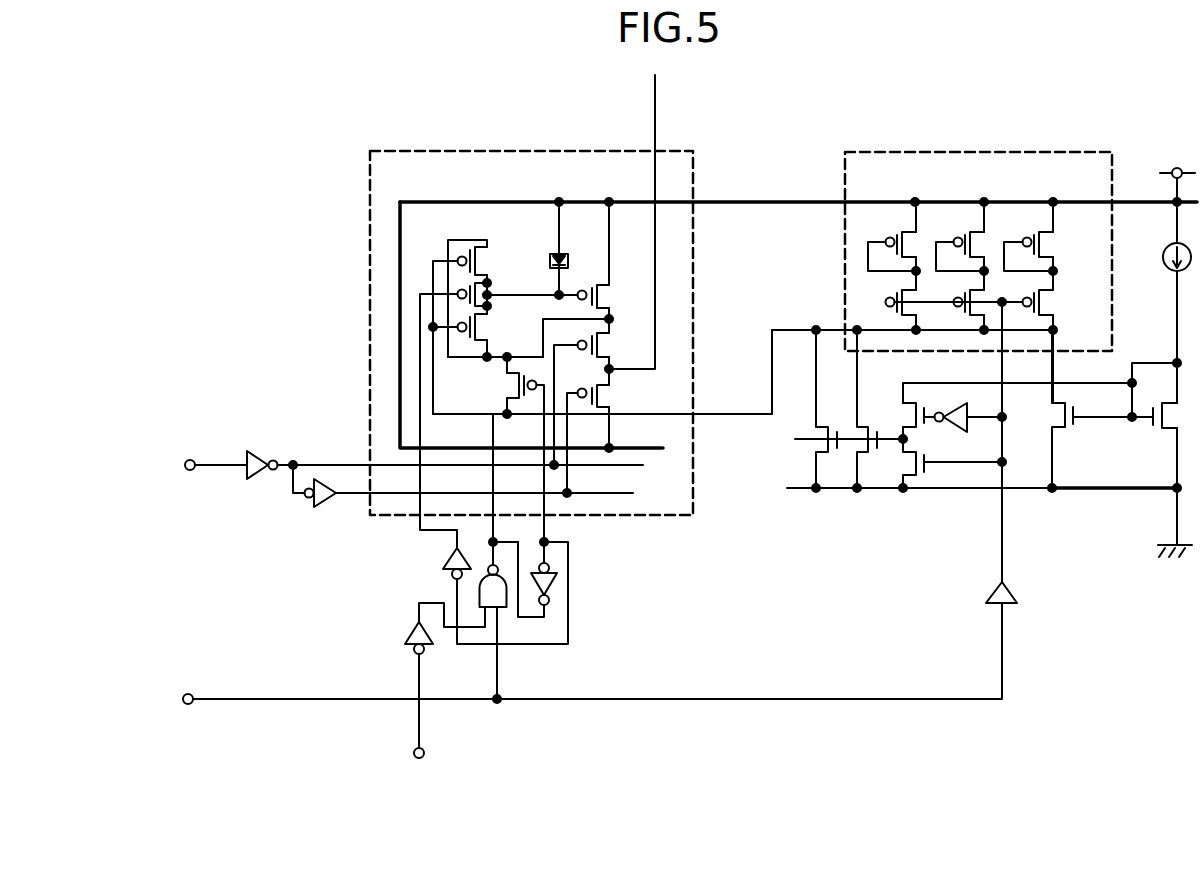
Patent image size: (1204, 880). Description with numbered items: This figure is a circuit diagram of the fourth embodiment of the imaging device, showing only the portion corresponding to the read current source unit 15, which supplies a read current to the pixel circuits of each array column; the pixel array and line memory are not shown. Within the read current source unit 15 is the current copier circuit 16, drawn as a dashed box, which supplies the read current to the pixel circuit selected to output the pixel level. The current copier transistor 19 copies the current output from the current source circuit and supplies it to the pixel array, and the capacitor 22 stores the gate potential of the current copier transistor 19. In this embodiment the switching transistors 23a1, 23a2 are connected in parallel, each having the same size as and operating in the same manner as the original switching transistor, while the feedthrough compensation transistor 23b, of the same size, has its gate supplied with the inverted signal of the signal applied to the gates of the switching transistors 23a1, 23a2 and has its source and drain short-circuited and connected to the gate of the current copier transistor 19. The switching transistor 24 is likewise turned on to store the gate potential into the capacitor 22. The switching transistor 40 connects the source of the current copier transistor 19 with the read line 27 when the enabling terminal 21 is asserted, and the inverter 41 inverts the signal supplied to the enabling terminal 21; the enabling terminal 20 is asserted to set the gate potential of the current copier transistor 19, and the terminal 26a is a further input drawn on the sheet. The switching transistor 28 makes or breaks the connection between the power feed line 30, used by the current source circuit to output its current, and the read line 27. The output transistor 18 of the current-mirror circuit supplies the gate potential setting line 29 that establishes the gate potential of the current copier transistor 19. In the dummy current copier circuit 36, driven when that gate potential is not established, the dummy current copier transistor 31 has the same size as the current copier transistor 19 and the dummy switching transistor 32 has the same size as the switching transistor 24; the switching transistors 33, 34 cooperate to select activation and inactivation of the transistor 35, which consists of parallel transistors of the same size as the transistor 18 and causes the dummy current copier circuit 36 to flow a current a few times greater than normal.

The read current source unit 15 is at (975, 86).
The current copier circuit 16 is at (578, 150).
The output transistor 18 is at (1071, 432).
The current copier transistor 19 is at (563, 279).
The enabling terminal 20 is at (577, 507).
The enabling terminal 21 is at (394, 465).
The capacitor 22 is at (563, 252).
The switching transistor 23a1 is at (457, 259).
The switching transistor 23a2 is at (457, 326).
The feedthrough compensation transistor 23b is at (498, 276).
The switching transistor 24 is at (602, 458).
The input terminal 26a is at (450, 710).
The read line 27 is at (655, 224).
The switching transistor 28 is at (601, 433).
The gate potential setting line 29 is at (738, 410).
The power feed line 30 is at (778, 202).
The dummy current copier transistor 31 is at (1051, 242).
The dummy switching transistor 32 is at (1051, 302).
The switching transistor 33 is at (896, 419).
The switching transistor 34 is at (900, 411).
The switching transistor 35 is at (807, 456).
The dummy current copier circuit 36 is at (1055, 152).
The switching transistor 40 is at (595, 400).
The inverter 41 is at (327, 510).